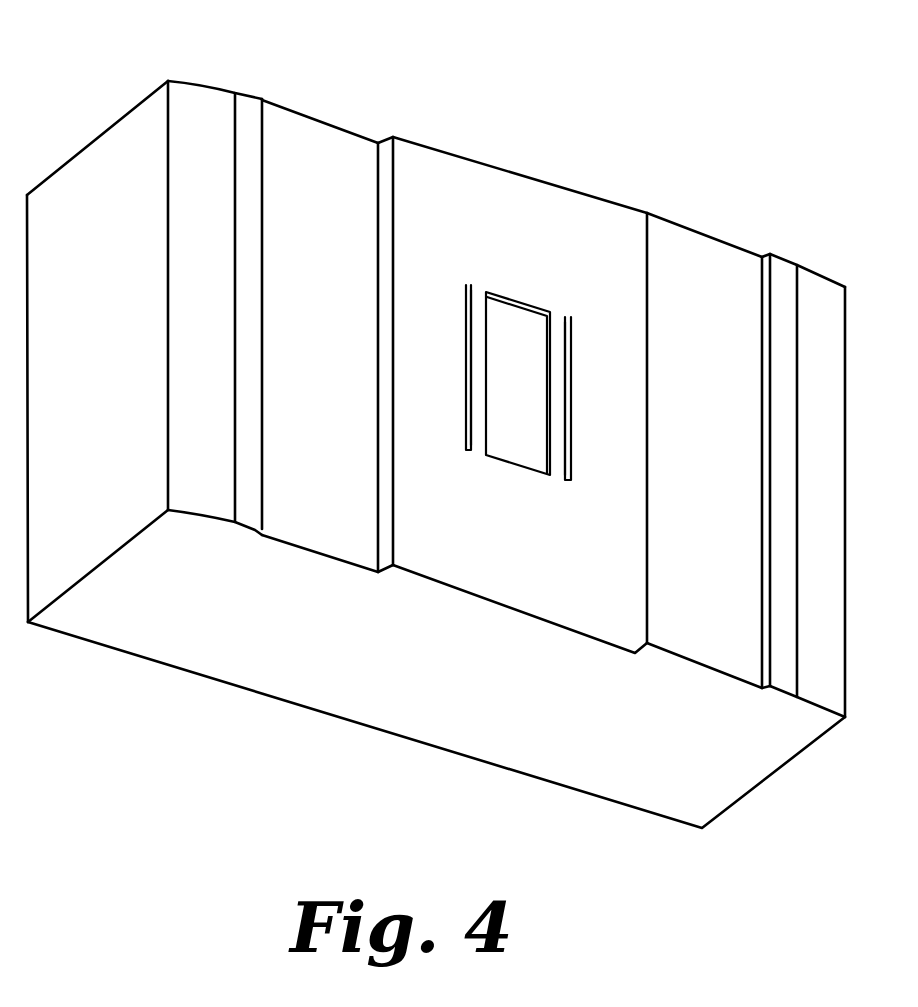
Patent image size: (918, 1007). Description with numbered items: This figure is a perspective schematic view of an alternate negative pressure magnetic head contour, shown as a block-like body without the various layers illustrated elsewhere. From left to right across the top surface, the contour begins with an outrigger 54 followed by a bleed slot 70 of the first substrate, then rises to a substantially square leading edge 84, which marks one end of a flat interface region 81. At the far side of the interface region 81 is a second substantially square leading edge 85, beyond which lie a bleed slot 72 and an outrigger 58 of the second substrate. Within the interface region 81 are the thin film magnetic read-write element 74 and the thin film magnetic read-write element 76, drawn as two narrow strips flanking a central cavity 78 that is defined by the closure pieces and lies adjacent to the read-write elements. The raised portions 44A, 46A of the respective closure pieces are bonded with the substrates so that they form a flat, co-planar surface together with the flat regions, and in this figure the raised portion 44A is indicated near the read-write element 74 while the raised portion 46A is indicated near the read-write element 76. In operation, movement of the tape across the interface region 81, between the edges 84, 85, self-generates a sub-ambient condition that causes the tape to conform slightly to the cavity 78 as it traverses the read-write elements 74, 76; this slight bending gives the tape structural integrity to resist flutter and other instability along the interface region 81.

The outrigger 54 is at (200, 95).
The bleed slot 70 is at (313, 152).
The leading edge 84 is at (393, 137).
The interface region 81 is at (538, 559).
The leading edge 85 is at (647, 213).
The bleed slot 72 is at (722, 275).
The outrigger 58 is at (826, 296).
The thin film magnetic read-write element 74 is at (468, 290).
The thin film magnetic read-write element 76 is at (569, 316).
The cavity 78 is at (519, 318).
The raised portion 44A is at (478, 372).
The raised portion 46A is at (560, 383).